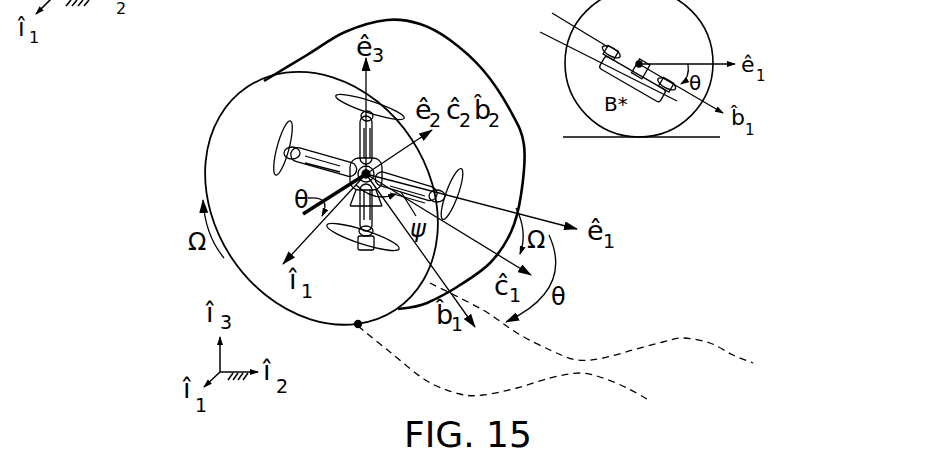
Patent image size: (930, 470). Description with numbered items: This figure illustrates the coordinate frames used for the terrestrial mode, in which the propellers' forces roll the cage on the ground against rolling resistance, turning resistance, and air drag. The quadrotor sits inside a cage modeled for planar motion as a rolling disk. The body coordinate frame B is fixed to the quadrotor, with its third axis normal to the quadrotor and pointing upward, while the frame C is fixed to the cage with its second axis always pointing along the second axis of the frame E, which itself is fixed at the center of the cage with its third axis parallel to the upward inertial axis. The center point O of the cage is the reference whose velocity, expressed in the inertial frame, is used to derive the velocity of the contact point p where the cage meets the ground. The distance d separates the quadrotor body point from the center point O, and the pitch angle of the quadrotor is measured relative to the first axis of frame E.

The body coordinate frame B is at (280, 150).
The cage frame C is at (446, 61).
The center point O is at (378, 157).
The contact point p is at (357, 342).
The distance between B* and O d is at (525, 54).